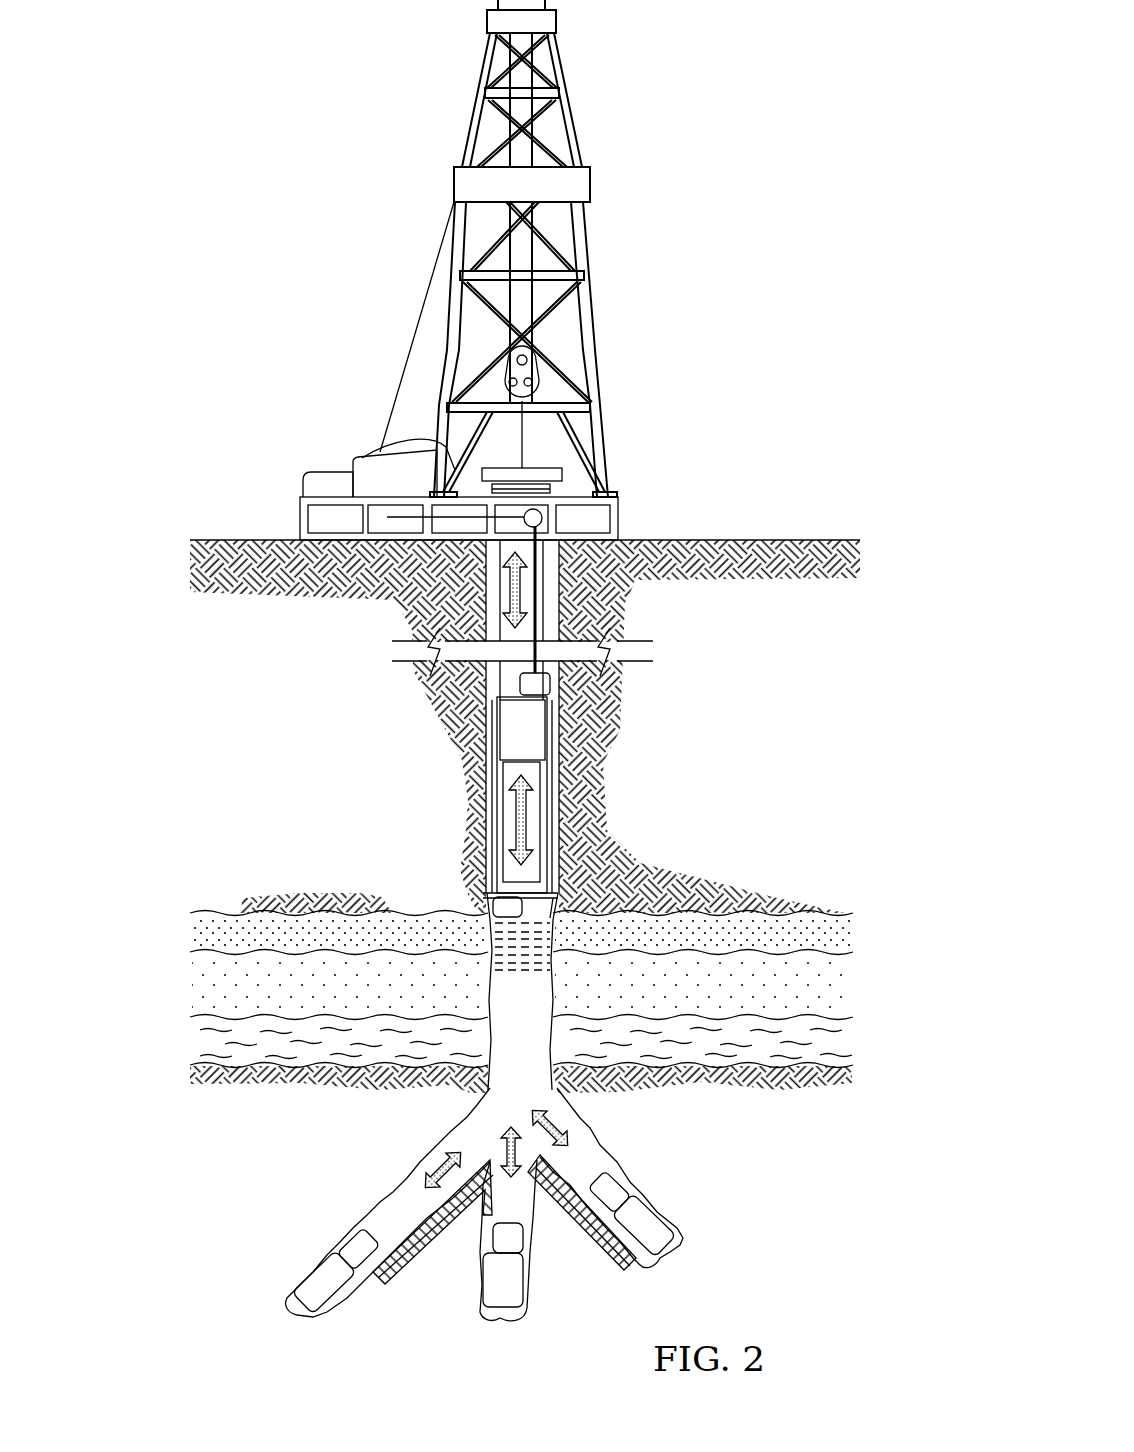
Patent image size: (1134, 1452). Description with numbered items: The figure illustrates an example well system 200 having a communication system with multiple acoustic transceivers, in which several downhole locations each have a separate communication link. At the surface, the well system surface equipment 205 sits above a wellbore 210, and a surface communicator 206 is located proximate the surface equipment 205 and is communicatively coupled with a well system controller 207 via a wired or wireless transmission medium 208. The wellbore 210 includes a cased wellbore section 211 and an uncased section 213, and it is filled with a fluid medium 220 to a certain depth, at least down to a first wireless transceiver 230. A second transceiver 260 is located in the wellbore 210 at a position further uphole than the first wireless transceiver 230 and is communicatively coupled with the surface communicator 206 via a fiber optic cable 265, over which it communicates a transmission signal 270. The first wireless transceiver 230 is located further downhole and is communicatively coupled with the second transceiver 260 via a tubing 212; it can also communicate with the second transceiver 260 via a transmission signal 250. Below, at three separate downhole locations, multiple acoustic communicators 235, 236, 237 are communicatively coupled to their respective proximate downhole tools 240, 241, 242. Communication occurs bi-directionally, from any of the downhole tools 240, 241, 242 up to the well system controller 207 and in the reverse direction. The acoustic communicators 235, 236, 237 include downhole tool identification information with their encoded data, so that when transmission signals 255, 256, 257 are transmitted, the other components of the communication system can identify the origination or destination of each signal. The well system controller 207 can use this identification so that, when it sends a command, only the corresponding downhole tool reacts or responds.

The well system 200 is at (250, 119).
The well system surface equipment 205 is at (600, 316).
The surface communicator 206 is at (530, 505).
The well system controller 207 is at (330, 518).
The wired or wireless transmission medium 208 is at (403, 517).
The wellbore 210 is at (567, 731).
The cased wellbore section 211 is at (562, 778).
The tubing 212 is at (540, 798).
The uncased section 213 is at (525, 1050).
The fluid medium 220 is at (523, 957).
The first wireless transceiver 230 is at (487, 908).
The acoustic communicator 235 is at (343, 1237).
The acoustic communicator 236 is at (533, 1247).
The acoustic communicator 237 is at (630, 1187).
The downhole tool 240 is at (307, 1297).
The downhole tool 241 is at (500, 1313).
The downhole tool 242 is at (665, 1252).
The transmission signal 250 is at (513, 820).
The transmission signal 255 is at (427, 1157).
The transmission signal 256 is at (497, 1148).
The transmission signal 257 is at (568, 1122).
The second transceiver 260 is at (530, 698).
The fiber optic cable 265 is at (545, 590).
The transmission signal 270 is at (512, 590).